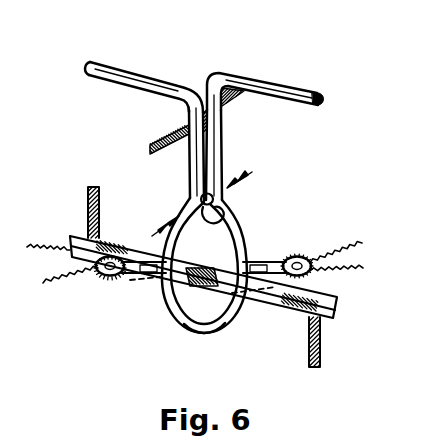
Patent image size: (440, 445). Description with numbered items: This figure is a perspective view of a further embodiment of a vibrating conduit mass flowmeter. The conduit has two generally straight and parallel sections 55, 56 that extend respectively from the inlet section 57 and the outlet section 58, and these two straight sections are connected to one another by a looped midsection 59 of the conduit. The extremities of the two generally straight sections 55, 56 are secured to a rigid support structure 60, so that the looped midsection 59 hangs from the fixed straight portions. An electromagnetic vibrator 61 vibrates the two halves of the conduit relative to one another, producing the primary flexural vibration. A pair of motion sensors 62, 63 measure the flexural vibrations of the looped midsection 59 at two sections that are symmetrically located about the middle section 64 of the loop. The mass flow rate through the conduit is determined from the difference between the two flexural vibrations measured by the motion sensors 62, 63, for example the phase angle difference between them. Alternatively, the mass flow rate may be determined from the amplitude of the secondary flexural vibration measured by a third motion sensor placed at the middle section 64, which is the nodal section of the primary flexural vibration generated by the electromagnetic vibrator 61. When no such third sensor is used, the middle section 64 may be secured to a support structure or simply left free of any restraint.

The generally straight and parallel section of the conduit 55 is at (190, 174).
The generally straight and parallel section of the conduit 56 is at (222, 143).
The inlet section 57 is at (138, 73).
The outlet section 58 is at (287, 88).
The looped midsection of the conduit 59 is at (170, 313).
The rigid support structure 60 is at (180, 127).
The electromagnetic vibrator 61 is at (228, 218).
The motion sensor 62 is at (112, 279).
The motion sensor 63 is at (311, 277).
The middle section 64 is at (207, 326).